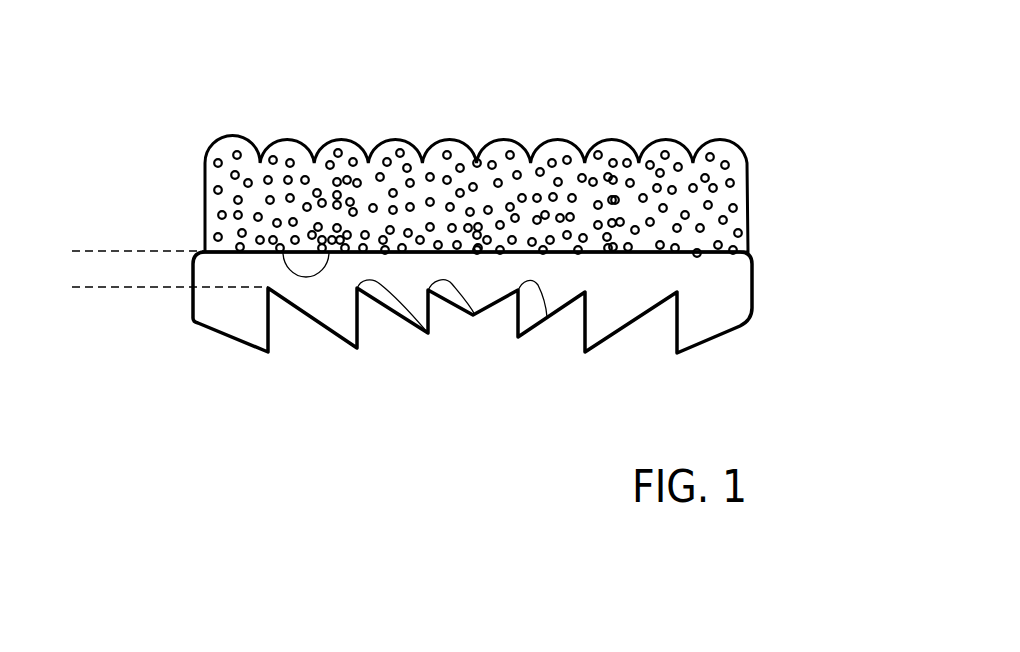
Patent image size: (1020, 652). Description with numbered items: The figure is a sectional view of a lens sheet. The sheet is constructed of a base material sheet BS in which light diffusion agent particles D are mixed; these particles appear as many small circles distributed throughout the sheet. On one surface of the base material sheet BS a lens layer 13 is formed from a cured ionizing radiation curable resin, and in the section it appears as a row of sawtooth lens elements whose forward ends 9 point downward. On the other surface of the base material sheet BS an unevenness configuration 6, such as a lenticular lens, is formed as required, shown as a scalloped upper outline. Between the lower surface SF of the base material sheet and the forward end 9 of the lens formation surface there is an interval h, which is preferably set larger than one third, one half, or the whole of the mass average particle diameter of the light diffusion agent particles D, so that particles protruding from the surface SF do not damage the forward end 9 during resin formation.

The unevenness configuration 6 is at (448, 143).
The light diffusion agent particles D is at (565, 143).
The lower surface of the base material sheet SF is at (283, 252).
The base material sheet BS is at (806, 197).
The lens layer 13 is at (806, 303).
The forward end of the lens formation surface 9 is at (547, 317).
The interval h is at (82, 152).